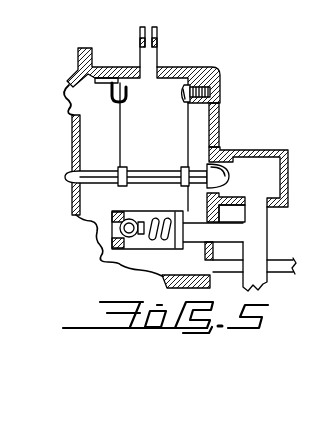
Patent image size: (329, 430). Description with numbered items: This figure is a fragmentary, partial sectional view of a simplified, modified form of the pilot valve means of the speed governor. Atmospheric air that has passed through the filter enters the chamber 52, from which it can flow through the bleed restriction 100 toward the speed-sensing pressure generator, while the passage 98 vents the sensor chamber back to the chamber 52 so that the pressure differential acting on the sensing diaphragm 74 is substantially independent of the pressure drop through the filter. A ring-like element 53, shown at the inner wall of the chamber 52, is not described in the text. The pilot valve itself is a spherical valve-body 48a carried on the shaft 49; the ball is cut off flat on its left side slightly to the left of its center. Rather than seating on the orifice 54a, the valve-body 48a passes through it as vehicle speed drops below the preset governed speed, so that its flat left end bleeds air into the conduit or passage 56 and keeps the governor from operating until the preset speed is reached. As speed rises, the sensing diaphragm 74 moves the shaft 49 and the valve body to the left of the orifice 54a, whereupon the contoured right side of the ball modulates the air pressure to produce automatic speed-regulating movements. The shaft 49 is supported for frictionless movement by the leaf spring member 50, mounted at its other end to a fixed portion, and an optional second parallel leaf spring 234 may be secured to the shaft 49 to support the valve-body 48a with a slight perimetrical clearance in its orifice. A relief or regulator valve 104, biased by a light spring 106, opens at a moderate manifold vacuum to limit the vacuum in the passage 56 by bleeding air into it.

The valve-body 48a is at (227, 182).
The shaft 49 is at (105, 176).
The leaf spring member 50 is at (188, 132).
The chamber 52 is at (172, 125).
The seal ring 53 is at (118, 67).
The orifice 54a is at (232, 160).
The conduit or passage 56 is at (257, 235).
The sensing diaphragm 74 is at (67, 93).
The passage 98 is at (287, 267).
The bleed restriction 100 is at (157, 44).
The relief or regulator valve 104 is at (121, 228).
The light spring 106 is at (156, 250).
The second parallel leaf spring 234 is at (72, 137).